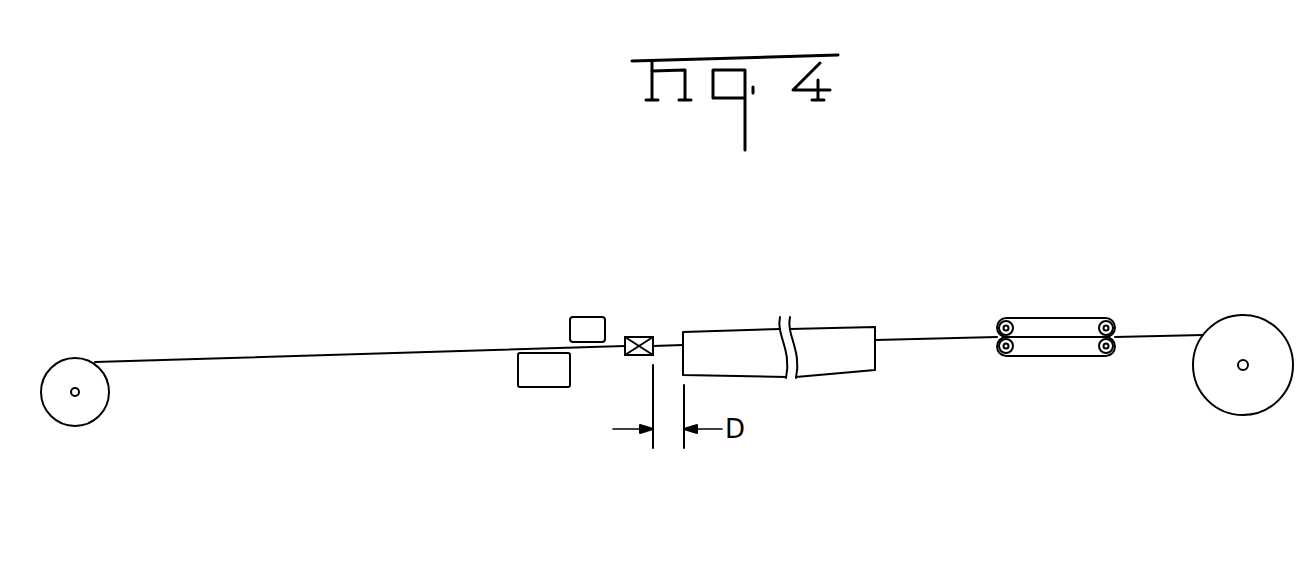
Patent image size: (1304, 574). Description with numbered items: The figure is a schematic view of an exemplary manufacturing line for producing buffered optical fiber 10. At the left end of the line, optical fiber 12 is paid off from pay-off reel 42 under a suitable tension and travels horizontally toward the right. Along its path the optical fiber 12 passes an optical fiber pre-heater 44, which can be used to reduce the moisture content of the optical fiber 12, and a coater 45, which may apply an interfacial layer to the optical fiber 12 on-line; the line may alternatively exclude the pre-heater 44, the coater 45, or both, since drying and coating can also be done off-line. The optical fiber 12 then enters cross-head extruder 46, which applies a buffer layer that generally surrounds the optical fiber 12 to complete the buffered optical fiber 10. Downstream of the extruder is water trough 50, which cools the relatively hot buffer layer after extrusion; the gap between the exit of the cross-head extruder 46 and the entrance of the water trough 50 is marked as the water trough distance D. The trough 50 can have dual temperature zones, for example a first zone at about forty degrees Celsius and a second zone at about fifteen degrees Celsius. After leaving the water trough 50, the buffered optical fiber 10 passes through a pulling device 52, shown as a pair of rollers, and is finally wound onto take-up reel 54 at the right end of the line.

The buffered optical fiber 10 is at (670, 343).
The optical fiber 12 is at (160, 355).
The pay-off reel 42 is at (70, 365).
The optical fiber pre-heater 44 is at (545, 388).
The coater 45 is at (578, 322).
The cross-head extruder 46 is at (632, 337).
The water trough 50 is at (818, 335).
The pulling device 52 is at (1043, 318).
The take-up reel 54 is at (1255, 318).